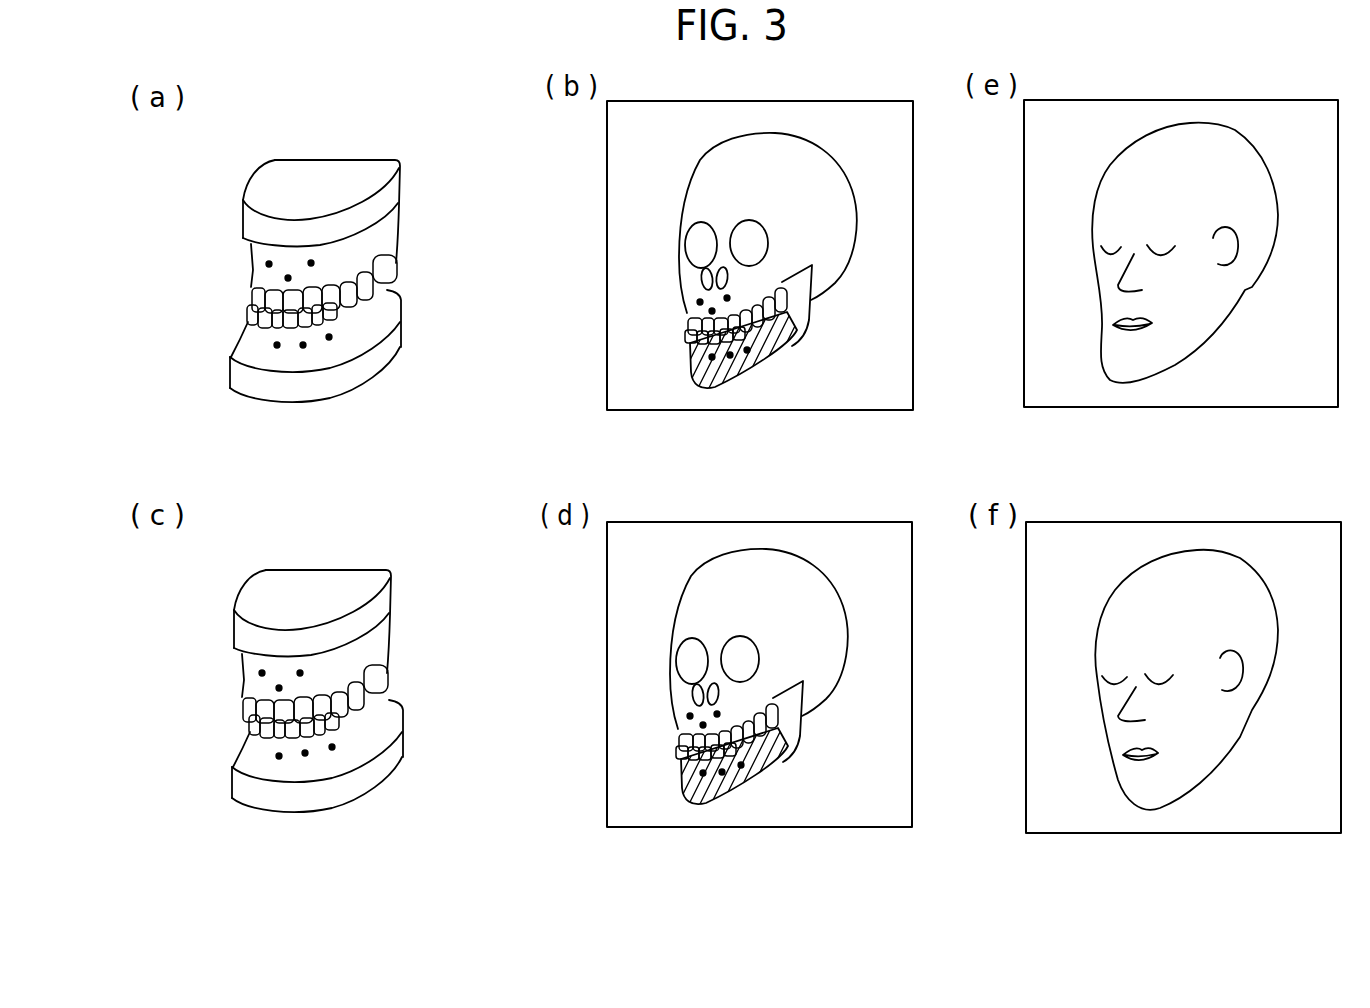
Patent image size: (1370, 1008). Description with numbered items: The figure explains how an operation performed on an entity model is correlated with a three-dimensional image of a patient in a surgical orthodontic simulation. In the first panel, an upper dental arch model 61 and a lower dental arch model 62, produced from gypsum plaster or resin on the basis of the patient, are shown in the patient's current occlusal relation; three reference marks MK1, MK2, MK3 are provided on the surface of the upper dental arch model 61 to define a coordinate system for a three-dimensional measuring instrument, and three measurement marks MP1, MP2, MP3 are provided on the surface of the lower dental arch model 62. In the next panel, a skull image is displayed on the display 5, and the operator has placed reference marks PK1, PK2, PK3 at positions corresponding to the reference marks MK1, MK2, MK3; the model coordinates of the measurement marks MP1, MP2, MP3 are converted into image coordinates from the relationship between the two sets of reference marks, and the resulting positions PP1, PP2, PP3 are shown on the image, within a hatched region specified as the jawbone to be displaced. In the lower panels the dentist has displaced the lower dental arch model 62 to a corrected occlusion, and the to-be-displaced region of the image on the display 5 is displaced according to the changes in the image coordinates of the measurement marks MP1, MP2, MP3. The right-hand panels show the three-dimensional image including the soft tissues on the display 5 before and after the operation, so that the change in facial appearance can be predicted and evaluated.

The upper dental arch model 61 is at (394, 192).
The lower dental arch model 62 is at (383, 358).
The reference mark MK1 is at (269, 263).
The reference mark MK2 is at (288, 278).
The reference mark MK3 is at (311, 263).
The measurement mark MP1 is at (277, 345).
The measurement mark MP2 is at (303, 345).
The measurement mark MP3 is at (329, 337).
The reference mark PK1 is at (700, 302).
The reference mark PK2 is at (712, 311).
The reference mark PK3 is at (727, 298).
The position PP1 is at (712, 357).
The position PP2 is at (730, 355).
The position PP3 is at (747, 350).
The display 5 is at (885, 410).